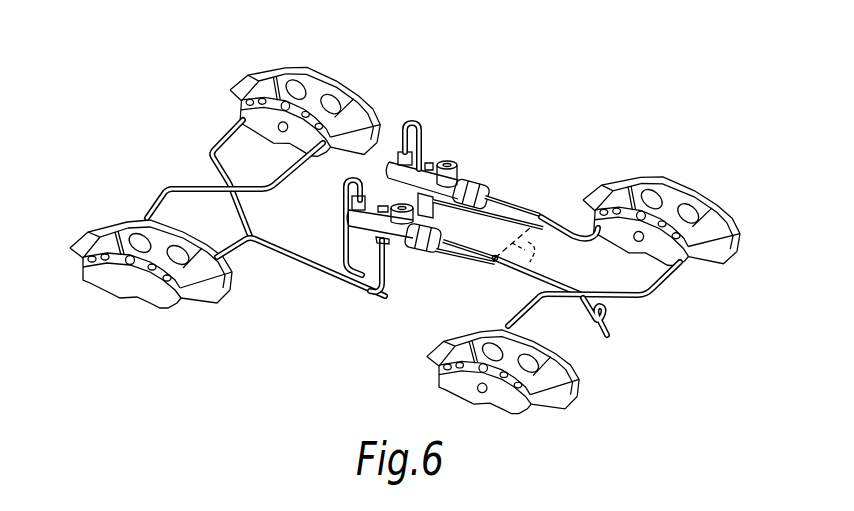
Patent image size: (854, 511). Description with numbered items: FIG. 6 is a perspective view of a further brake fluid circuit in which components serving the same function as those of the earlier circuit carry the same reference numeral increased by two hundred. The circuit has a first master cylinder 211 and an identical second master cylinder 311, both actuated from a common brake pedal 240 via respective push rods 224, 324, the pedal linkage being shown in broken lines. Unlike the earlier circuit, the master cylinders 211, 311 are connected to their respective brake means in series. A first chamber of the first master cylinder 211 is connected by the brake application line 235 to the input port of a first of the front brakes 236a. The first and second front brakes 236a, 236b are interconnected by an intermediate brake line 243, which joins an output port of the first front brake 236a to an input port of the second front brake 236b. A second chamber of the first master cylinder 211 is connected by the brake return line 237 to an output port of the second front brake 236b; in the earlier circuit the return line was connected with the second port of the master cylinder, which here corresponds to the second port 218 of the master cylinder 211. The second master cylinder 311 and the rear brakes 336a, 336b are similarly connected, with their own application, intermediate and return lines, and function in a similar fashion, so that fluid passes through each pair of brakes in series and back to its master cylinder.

The first front brake 236a is at (97, 278).
The second front brake 236b is at (250, 78).
The rear brake 336a is at (723, 222).
The rear brake 336b is at (575, 385).
The intermediate brake line 243 is at (160, 205).
The brake application line 235 is at (343, 232).
The second port 218 is at (362, 283).
The brake return line 237 is at (371, 292).
The first master cylinder 211 is at (407, 245).
The second master cylinder 311 is at (458, 185).
The push rod 224 is at (463, 258).
The push rod 324 is at (517, 203).
The brake pedal 240 is at (555, 265).